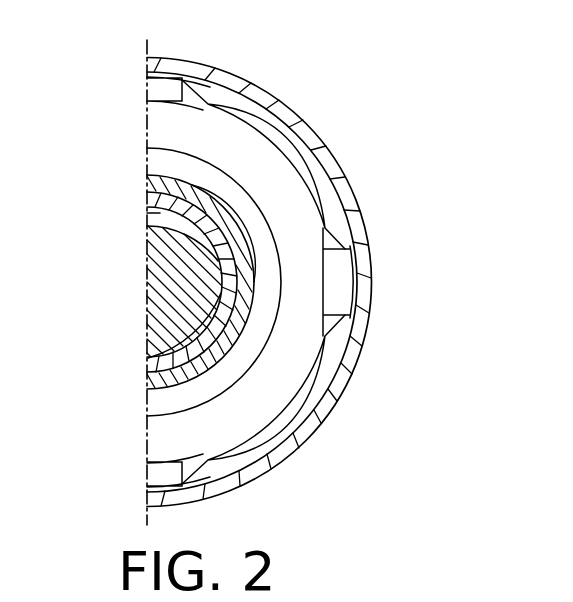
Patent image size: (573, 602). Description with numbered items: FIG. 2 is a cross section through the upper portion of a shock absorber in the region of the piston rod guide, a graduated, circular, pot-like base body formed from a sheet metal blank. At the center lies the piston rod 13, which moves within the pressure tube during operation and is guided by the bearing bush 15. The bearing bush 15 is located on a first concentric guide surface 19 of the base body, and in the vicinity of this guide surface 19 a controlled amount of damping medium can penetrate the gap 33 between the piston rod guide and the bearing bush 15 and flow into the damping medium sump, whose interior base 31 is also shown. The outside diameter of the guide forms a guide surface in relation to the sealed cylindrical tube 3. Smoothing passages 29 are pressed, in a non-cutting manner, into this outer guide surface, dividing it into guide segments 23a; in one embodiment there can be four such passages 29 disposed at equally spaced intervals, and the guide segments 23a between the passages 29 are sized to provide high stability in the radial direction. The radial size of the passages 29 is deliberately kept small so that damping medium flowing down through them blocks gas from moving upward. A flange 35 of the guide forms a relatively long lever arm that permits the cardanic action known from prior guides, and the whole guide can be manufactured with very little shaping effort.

The sealed cylindrical tube 3 is at (366, 185).
The piston rod 13 is at (155, 338).
The bearing bush 15 is at (160, 213).
The first concentric guide surface 19 is at (152, 272).
The guide segments 23a is at (300, 110).
The smoothing passages 29 is at (367, 303).
The interior base 31 is at (158, 165).
The gap 33 is at (157, 308).
The flange 35 is at (160, 193).